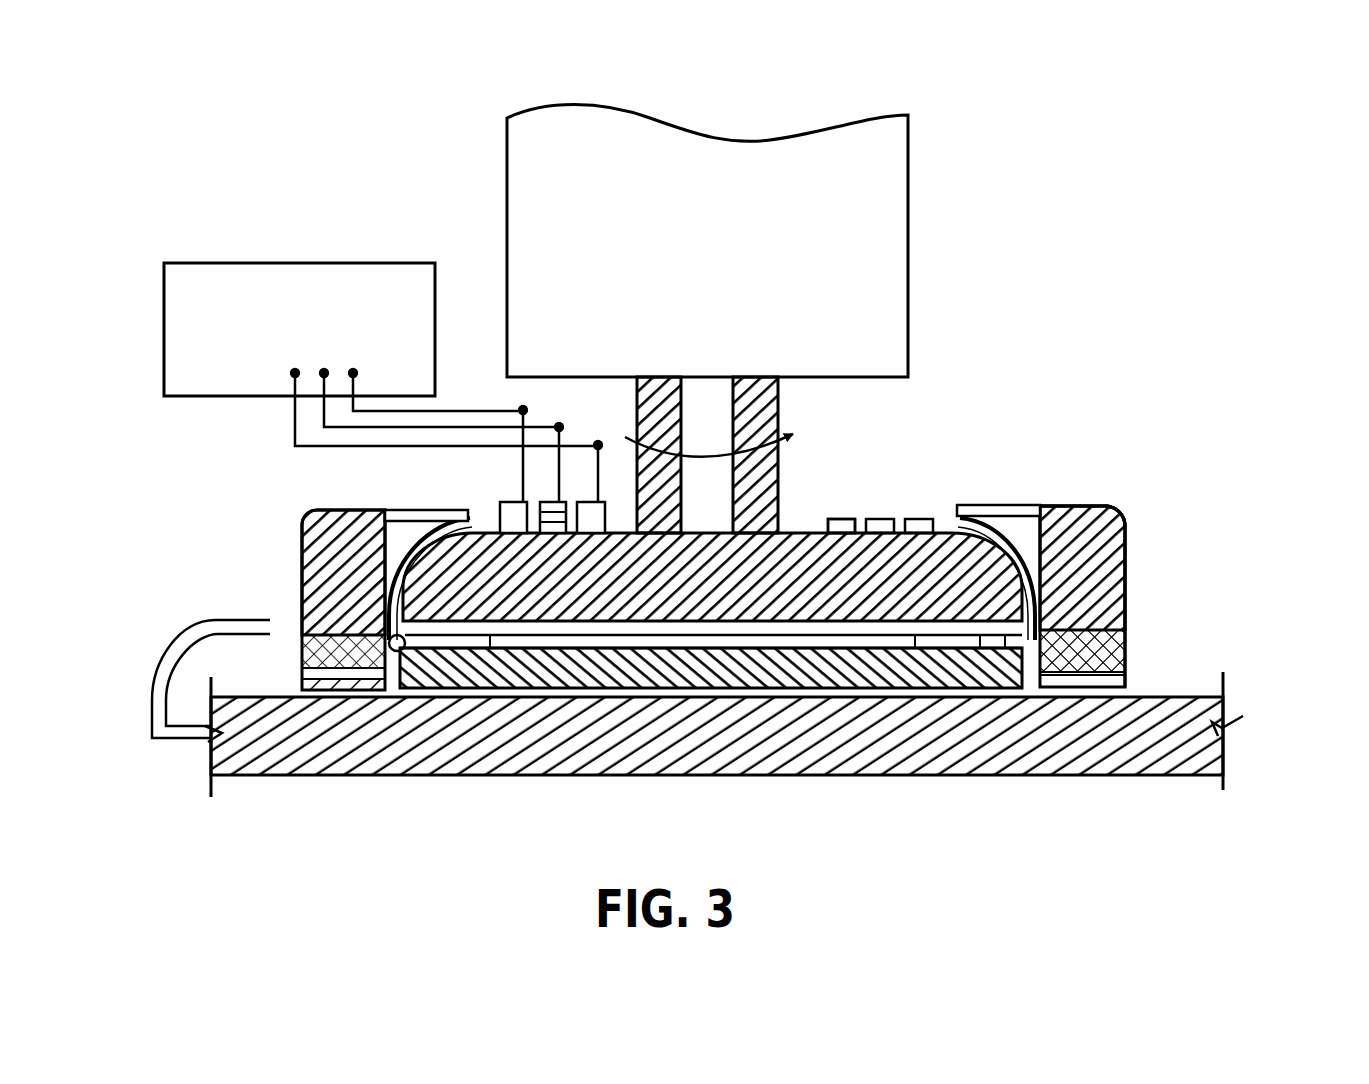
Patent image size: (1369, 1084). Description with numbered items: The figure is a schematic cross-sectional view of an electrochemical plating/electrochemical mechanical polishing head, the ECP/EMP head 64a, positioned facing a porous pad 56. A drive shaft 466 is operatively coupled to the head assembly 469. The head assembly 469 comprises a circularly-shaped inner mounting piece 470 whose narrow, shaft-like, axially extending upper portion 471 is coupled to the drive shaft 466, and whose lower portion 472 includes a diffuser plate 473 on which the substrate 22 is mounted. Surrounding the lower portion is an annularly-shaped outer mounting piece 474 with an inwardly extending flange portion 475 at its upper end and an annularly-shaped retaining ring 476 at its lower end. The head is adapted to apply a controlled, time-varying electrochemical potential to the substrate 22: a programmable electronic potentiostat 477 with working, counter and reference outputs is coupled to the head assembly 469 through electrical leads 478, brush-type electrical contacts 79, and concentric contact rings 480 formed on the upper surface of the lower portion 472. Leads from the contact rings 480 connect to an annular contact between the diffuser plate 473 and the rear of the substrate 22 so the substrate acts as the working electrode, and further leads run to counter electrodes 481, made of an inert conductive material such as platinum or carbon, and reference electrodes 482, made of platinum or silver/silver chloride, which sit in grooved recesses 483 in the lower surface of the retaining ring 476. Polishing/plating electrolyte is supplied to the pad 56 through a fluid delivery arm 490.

The substrate 22 is at (537, 680).
The pad 56 is at (352, 777).
The ECP/EMP head 64a is at (1102, 363).
The brush-type electrical contacts 79 is at (512, 502).
The drive shaft 466 is at (890, 242).
The head assembly 469 is at (1102, 503).
The inner mounting piece 470 is at (788, 476).
The upper portion 471 is at (780, 400).
The lower portion 472 is at (808, 526).
The diffuser plate 473 is at (795, 628).
The outer mounting piece 474 is at (1126, 530).
The flange portion 475 is at (1075, 505).
The retaining ring 476 is at (1128, 650).
The potentiostat 477 is at (228, 263).
The electrical leads 478 is at (284, 424).
The concentric contact rings 480 is at (455, 512).
The counter electrodes 481 is at (1042, 548).
The reference electrodes 482 is at (915, 645).
The grooved recesses 483 is at (1127, 681).
The fluid delivery arm 490 is at (185, 630).